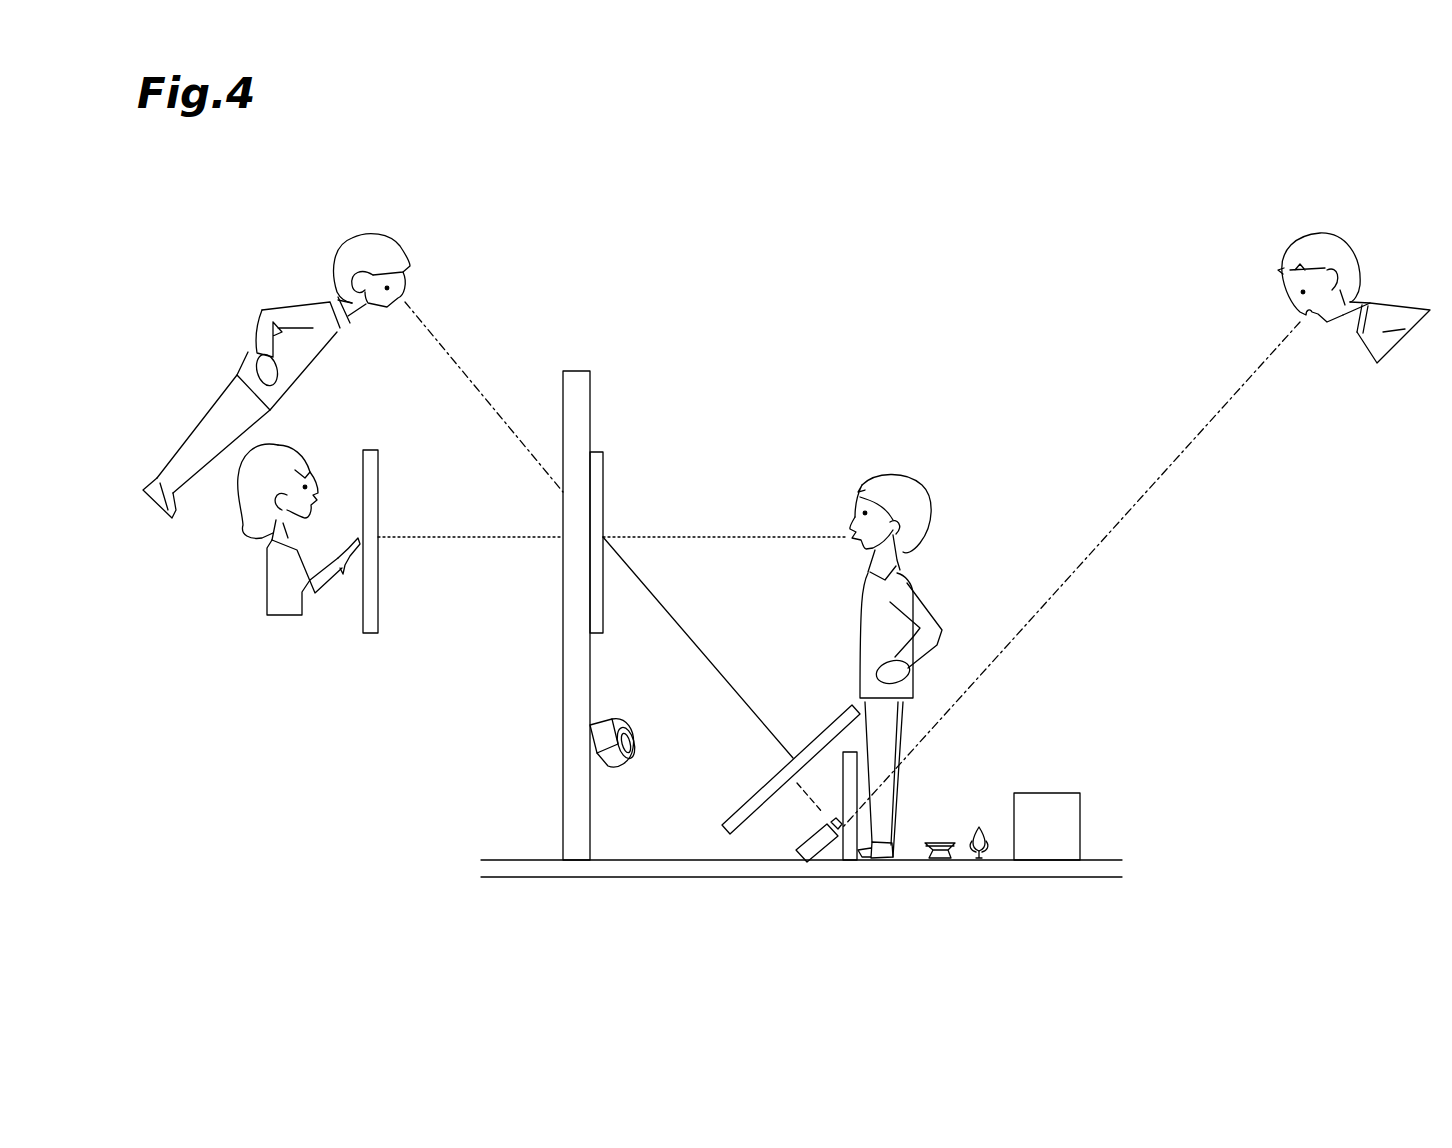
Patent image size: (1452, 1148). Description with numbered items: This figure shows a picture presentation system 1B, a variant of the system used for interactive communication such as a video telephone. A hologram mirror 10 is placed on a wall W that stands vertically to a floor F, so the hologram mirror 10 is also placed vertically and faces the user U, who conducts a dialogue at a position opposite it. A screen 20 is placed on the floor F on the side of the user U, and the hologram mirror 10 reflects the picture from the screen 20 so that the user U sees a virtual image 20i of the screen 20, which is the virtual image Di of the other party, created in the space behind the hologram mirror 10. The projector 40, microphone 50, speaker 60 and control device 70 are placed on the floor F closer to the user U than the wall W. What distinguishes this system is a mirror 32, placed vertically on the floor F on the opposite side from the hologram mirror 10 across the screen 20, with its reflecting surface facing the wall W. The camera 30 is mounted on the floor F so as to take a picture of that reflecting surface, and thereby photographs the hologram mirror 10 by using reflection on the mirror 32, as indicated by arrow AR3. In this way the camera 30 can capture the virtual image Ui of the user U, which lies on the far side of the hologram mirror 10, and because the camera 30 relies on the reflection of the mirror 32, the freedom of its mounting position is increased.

The picture presentation system 1B is at (1062, 236).
The hologram mirror 10 is at (604, 470).
The screen 20 is at (820, 722).
The virtual image of the screen 20i is at (379, 470).
The camera 30 is at (805, 864).
The mirror 32 is at (850, 879).
The projector 40 is at (606, 720).
The microphone 50 is at (978, 825).
The speaker 60 is at (939, 842).
The control device 70 is at (1081, 810).
The arrow AR3 is at (822, 832).
The floor F is at (667, 879).
The wall W is at (591, 378).
The user U is at (920, 464).
The virtual image of the user Ui is at (312, 243).
The virtual image of the other party Di is at (318, 448).